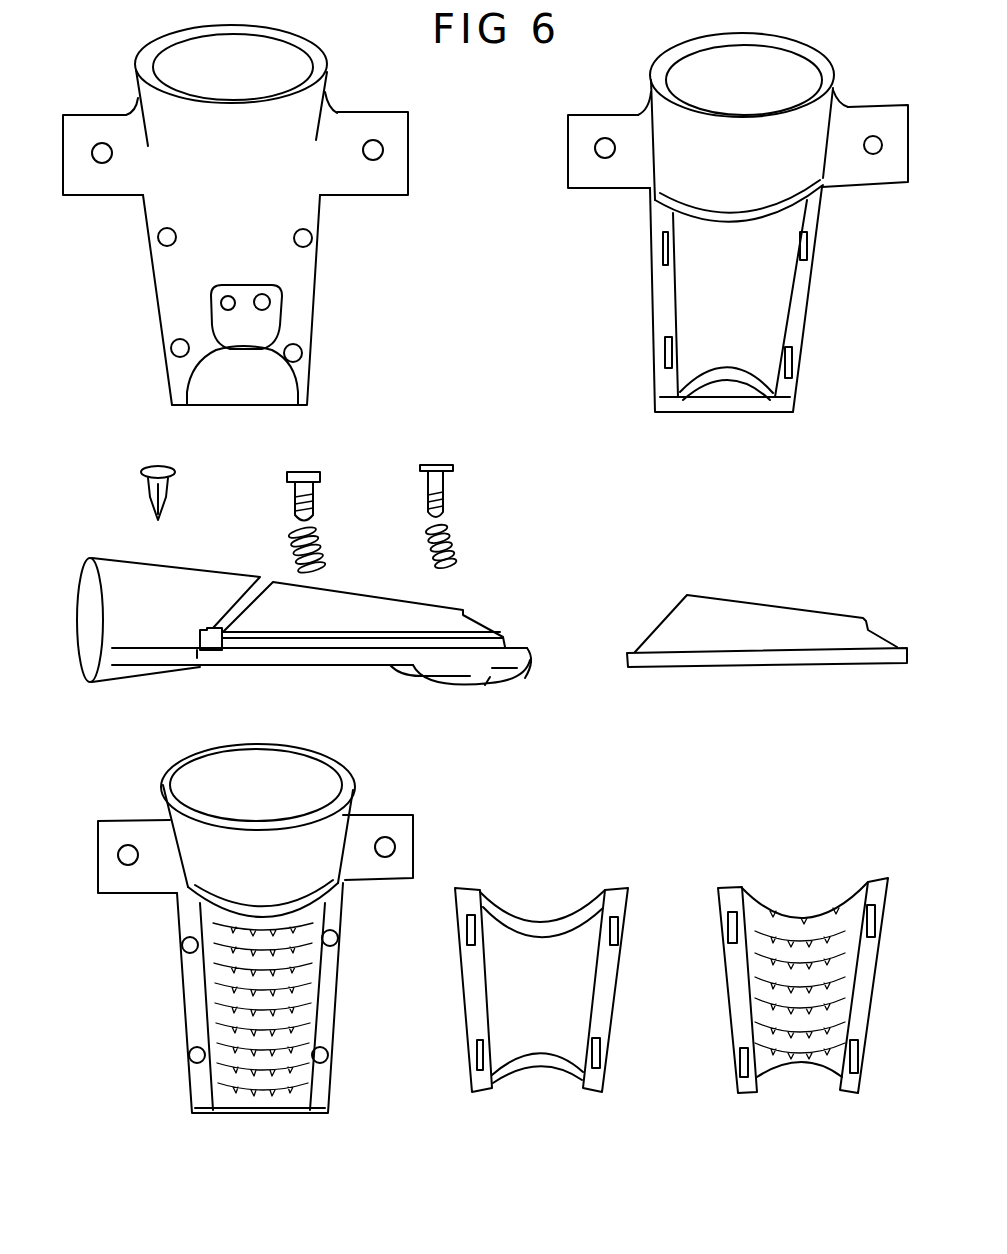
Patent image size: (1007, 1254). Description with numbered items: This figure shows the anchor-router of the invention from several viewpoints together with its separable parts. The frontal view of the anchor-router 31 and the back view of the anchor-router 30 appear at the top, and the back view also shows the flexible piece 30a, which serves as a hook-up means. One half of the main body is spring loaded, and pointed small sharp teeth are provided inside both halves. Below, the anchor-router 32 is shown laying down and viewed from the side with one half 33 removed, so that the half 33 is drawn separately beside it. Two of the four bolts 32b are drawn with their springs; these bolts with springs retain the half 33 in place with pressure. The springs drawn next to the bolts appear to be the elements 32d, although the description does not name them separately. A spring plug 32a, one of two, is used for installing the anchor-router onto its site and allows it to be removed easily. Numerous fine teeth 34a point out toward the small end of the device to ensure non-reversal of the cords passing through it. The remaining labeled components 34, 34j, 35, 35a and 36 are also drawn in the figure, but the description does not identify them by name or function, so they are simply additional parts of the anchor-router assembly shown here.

The anchor-router (back view) 30 is at (338, 135).
The flexible piece 30a is at (262, 325).
The anchor-router (frontal view) 31 is at (633, 105).
The anchor-router (side view) 32 is at (137, 558).
The spring plug 32a is at (178, 480).
The bolts 32b is at (422, 463).
The springs 32d is at (420, 537).
The half 33 is at (737, 598).
The pole mount bracket with hook panel 34 is at (357, 805).
The fine teeth 34a is at (797, 1043).
The pole receiving bore 34j is at (270, 70).
The curved insert panel 35 is at (545, 913).
The slots 35a is at (745, 1070).
The curved hook insert panel 36 is at (818, 905).